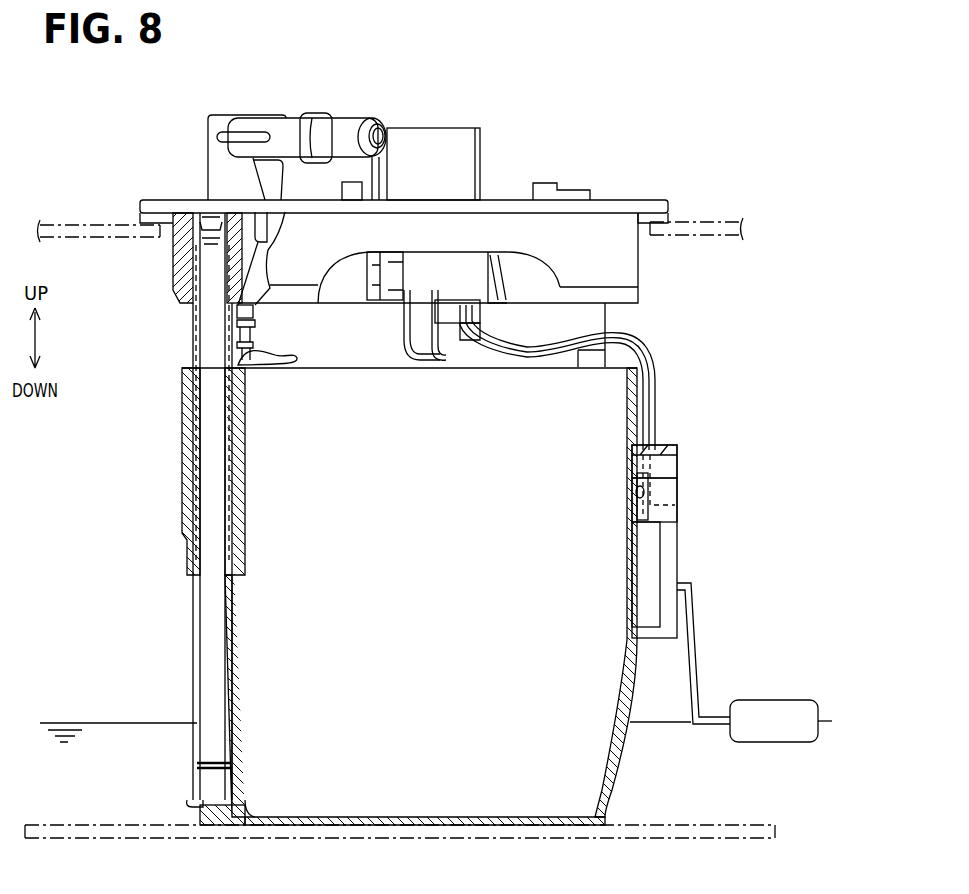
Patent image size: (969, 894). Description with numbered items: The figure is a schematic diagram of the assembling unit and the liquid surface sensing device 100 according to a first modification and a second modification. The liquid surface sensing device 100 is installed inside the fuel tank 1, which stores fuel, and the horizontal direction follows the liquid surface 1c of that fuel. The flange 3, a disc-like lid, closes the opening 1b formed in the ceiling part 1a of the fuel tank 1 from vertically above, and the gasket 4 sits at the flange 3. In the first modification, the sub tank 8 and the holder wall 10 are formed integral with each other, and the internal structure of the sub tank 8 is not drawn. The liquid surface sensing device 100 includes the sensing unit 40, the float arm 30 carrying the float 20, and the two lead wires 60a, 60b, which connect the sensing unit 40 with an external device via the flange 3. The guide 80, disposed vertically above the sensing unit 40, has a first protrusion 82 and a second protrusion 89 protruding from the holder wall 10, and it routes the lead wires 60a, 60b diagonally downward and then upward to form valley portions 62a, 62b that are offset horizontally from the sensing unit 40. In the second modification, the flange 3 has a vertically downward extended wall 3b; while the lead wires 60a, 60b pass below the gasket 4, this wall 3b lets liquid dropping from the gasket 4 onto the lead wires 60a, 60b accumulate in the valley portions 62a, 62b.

The fuel tank 1 is at (391, 439).
The ceiling part 1a is at (93, 222).
The opening 1b is at (167, 230).
The liquid surface 1c is at (72, 723).
The flange 3 is at (510, 258).
The vertically downward extended wall 3b is at (640, 258).
The gasket 4 is at (670, 218).
The liquid surface sensing device 100 is at (695, 340).
The first lead wire 60a is at (638, 377).
The second lead wire 60b is at (643, 370).
The guide 80 is at (724, 538).
The first protrusion 82 is at (677, 463).
The second protrusion 89 is at (677, 498).
The valley portion 62a is at (726, 503).
The valley portion 62b is at (648, 495).
The sensing unit 40 is at (660, 565).
The float arm 30 is at (699, 625).
The float 20 is at (789, 702).
The sub tank 8 is at (452, 596).
The holder wall 10 is at (617, 785).